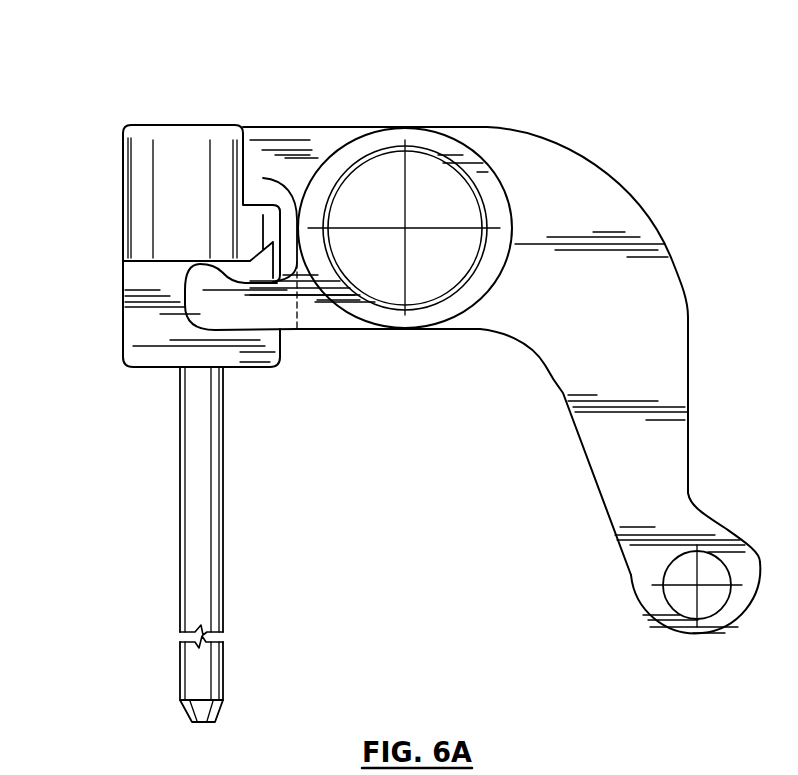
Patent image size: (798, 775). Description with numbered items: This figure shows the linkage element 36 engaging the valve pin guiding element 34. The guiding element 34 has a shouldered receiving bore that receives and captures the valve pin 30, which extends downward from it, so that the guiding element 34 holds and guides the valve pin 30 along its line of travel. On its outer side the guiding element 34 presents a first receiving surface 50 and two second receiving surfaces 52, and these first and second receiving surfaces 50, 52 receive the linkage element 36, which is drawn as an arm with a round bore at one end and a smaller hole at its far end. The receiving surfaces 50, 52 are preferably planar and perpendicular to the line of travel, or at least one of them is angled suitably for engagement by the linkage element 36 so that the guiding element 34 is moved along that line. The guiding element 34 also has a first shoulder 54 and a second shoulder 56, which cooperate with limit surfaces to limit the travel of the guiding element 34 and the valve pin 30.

The valve pin 30 is at (203, 517).
The guiding element 34 is at (217, 138).
The linkage element 36 is at (545, 150).
The first receiving surface 50 is at (260, 205).
The second receiving surfaces 52 is at (147, 265).
The first shoulder 54 is at (167, 122).
The second shoulder 56 is at (243, 366).